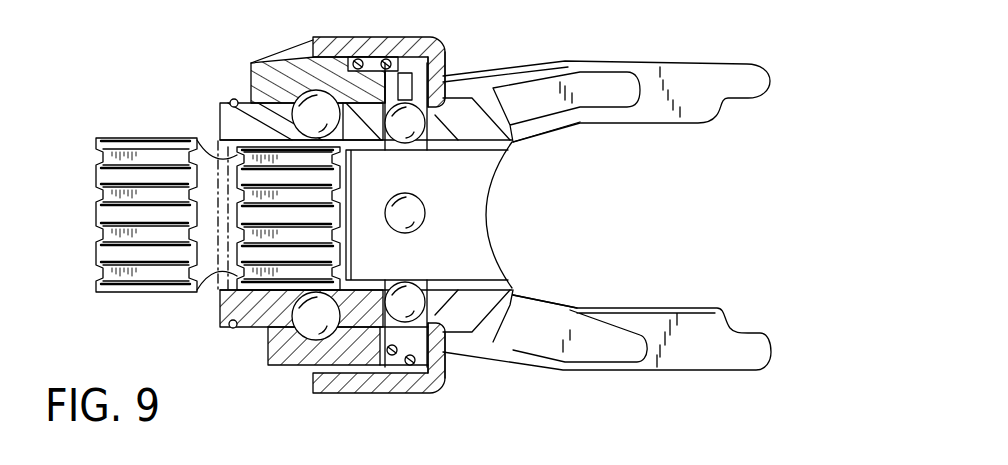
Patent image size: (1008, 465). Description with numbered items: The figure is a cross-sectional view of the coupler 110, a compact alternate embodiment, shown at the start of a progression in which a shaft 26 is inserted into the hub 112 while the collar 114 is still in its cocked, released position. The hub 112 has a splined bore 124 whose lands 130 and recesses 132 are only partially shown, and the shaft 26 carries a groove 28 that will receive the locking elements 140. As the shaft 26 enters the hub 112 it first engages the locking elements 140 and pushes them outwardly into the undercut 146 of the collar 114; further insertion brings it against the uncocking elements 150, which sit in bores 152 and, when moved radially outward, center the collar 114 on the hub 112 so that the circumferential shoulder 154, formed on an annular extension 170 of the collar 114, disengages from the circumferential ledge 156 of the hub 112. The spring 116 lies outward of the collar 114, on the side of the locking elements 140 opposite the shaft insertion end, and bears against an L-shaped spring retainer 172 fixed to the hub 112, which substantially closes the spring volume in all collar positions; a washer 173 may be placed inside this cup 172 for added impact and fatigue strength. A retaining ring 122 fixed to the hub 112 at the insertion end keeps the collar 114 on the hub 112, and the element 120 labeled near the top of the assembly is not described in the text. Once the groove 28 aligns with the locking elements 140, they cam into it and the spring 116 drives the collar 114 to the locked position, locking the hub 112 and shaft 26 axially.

The shaft 26 is at (143, 138).
The groove 28 is at (218, 158).
The coupler 110 is at (418, 405).
The hub 112 is at (210, 315).
The collar 114 is at (276, 378).
The spring 116 is at (392, 37).
The retainer plate 120 is at (327, 40).
The retaining ring 122 is at (233, 99).
The bore 124 is at (480, 204).
The lands 130 is at (462, 150).
The recesses 132 is at (490, 142).
The locking elements 140 is at (310, 115).
The undercut 146 is at (303, 84).
The uncocking elements 150 is at (422, 220).
The bores 152 is at (400, 137).
The circumferential shoulder 154 is at (322, 66).
The circumferential ledge 156 is at (470, 88).
The annular extension 170 is at (410, 92).
The spring retainer 172 is at (444, 62).
The washer 173 is at (446, 372).